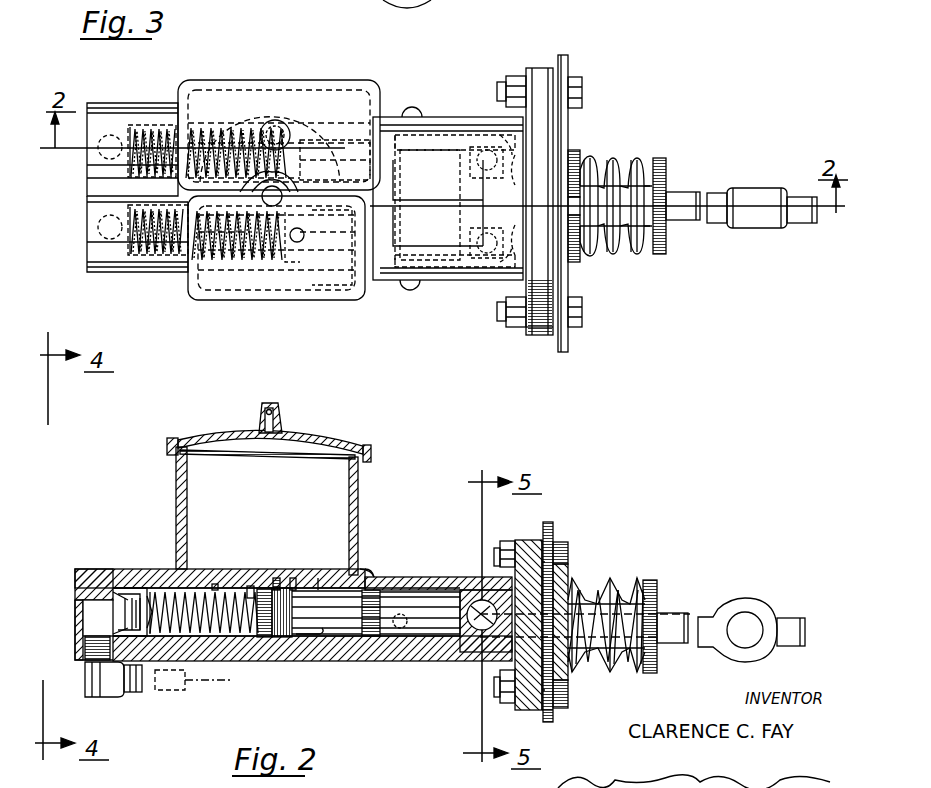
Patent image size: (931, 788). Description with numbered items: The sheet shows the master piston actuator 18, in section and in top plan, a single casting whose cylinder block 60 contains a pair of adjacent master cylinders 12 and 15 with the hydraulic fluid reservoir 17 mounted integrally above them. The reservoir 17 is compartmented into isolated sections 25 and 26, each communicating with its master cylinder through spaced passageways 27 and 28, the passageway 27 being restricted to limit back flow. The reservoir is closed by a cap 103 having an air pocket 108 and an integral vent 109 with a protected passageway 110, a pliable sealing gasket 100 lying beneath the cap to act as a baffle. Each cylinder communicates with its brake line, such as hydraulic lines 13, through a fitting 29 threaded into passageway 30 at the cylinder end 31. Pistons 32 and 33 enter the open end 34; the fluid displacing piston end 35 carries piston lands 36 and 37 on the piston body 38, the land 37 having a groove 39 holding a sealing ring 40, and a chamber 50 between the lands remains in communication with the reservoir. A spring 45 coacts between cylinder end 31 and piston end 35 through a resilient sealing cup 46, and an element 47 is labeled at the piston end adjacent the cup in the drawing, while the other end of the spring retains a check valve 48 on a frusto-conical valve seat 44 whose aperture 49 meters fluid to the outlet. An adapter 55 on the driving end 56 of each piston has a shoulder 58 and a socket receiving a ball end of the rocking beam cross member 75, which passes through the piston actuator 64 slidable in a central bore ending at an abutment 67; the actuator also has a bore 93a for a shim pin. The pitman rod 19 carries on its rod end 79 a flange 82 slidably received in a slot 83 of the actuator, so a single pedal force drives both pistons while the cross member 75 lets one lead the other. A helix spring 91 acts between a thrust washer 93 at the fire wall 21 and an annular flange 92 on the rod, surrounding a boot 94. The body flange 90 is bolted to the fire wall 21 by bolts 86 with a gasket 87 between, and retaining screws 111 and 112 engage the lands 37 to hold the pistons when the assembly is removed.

In FIG. 3, the master cylinder portion 12 is at (168, 258).
In FIG. 2, the hydraulic lines 13 is at (149, 693).
In FIG. 3, the master cylinder portion 15 is at (156, 113).
In FIG. 2, the master cylinder portion 15 is at (228, 641).
In FIG. 2, the hydraulic fluid reservoir 17 is at (176, 497).
In FIG. 2, the master piston actuator 18 is at (412, 577).
In FIG. 3, the pitman rod 19 is at (690, 192).
In FIG. 2, the pitman rod 19 is at (664, 612).
In FIG. 3, the fire wall 21 is at (562, 352).
In FIG. 2, the fire wall 21 is at (556, 532).
In FIG. 3, the reservoir section 25 is at (267, 292).
In FIG. 3, the reservoir section 26 is at (206, 95).
In FIG. 2, the reservoir section 26 is at (358, 480).
In FIG. 3, the passageway 27 is at (258, 130).
In FIG. 2, the passageway 27 is at (252, 584).
In FIG. 3, the passageway 28 is at (333, 134).
In FIG. 2, the passageway 28 is at (293, 578).
In FIG. 2, the fitting 29 is at (84, 690).
In FIG. 2, the passageway 30 is at (90, 612).
In FIG. 2, the cylinder end 31 is at (130, 588).
In FIG. 3, the piston 32 is at (332, 258).
In FIG. 3, the piston 33 is at (340, 98).
In FIG. 2, the piston 33 is at (300, 652).
In FIG. 2, the open end 34 is at (568, 698).
In FIG. 2, the piston end 35 is at (290, 613).
In FIG. 2, the piston land 36 is at (283, 640).
In FIG. 2, the piston land 37 is at (364, 640).
In FIG. 2, the piston body 38 is at (318, 640).
In FIG. 2, the groove 39 is at (362, 613).
In FIG. 2, the sealing ring 40 is at (368, 580).
In FIG. 2, the valve seat 44 is at (118, 604).
In FIG. 2, the spring 45 is at (216, 583).
In FIG. 2, the sealing cup 46 is at (278, 578).
In FIG. 2, the piston cup 47 is at (256, 642).
In FIG. 3, the check valve 48 is at (140, 112).
In FIG. 2, the check valve 48 is at (134, 586).
In FIG. 2, the aperture 49 is at (193, 679).
In FIG. 2, the chamber 50 is at (321, 576).
In FIG. 3, the adapter 55 is at (510, 140).
In FIG. 3, the driving end 56 is at (426, 148).
In FIG. 2, the driving end 56 is at (432, 648).
In FIG. 3, the shoulder 58 is at (521, 164).
In FIG. 3, the cylinder block 60 is at (460, 116).
In FIG. 2, the cylinder block 60 is at (238, 662).
In FIG. 3, the piston actuator 64 is at (470, 162).
In FIG. 2, the piston actuator 64 is at (481, 655).
In FIG. 3, the abutment 67 is at (408, 201).
In FIG. 3, the rocking beam cross member 75 is at (462, 194).
In FIG. 2, the rocking beam cross member 75 is at (478, 598).
In FIG. 2, the rod end 79 is at (583, 594).
In FIG. 3, the flange 82 is at (552, 170).
In FIG. 2, the flange 82 is at (524, 545).
In FIG. 3, the slot 83 is at (574, 245).
In FIG. 2, the slot 83 is at (568, 662).
In FIG. 3, the bolts 86 is at (503, 80).
In FIG. 2, the bolts 86 is at (496, 548).
In FIG. 3, the gasket 87 is at (540, 335).
In FIG. 2, the gasket 87 is at (540, 710).
In FIG. 3, the body flange 90 is at (540, 68).
In FIG. 2, the body flange 90 is at (534, 545).
In FIG. 3, the helix spring 91 is at (620, 240).
In FIG. 2, the helix spring 91 is at (608, 578).
In FIG. 3, the annular flange 92 is at (663, 165).
In FIG. 2, the annular flange 92 is at (650, 580).
In FIG. 2, the thrust washer 93 is at (569, 554).
In FIG. 2, the bore 93a is at (485, 556).
In FIG. 3, the boot 94 is at (628, 175).
In FIG. 2, the boot 94 is at (618, 665).
In FIG. 2, the sealing gasket 100 is at (228, 458).
In FIG. 2, the cap 103 is at (366, 444).
In FIG. 2, the air pocket 108 is at (308, 434).
In FIG. 2, the vent 109 is at (262, 405).
In FIG. 2, the passageway 110 is at (264, 428).
In FIG. 3, the retaining screw 111 is at (402, 290).
In FIG. 3, the retaining screw 112 is at (412, 106).
In FIG. 2, the retaining screw 112 is at (399, 630).